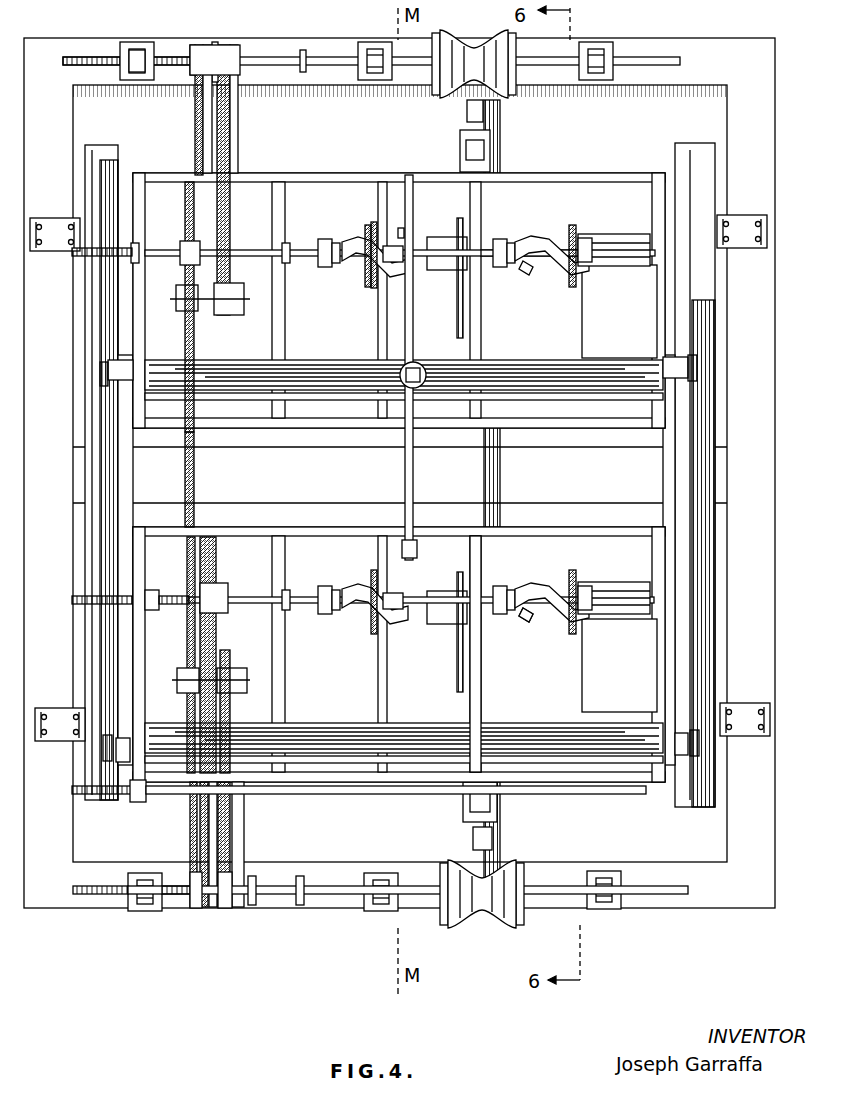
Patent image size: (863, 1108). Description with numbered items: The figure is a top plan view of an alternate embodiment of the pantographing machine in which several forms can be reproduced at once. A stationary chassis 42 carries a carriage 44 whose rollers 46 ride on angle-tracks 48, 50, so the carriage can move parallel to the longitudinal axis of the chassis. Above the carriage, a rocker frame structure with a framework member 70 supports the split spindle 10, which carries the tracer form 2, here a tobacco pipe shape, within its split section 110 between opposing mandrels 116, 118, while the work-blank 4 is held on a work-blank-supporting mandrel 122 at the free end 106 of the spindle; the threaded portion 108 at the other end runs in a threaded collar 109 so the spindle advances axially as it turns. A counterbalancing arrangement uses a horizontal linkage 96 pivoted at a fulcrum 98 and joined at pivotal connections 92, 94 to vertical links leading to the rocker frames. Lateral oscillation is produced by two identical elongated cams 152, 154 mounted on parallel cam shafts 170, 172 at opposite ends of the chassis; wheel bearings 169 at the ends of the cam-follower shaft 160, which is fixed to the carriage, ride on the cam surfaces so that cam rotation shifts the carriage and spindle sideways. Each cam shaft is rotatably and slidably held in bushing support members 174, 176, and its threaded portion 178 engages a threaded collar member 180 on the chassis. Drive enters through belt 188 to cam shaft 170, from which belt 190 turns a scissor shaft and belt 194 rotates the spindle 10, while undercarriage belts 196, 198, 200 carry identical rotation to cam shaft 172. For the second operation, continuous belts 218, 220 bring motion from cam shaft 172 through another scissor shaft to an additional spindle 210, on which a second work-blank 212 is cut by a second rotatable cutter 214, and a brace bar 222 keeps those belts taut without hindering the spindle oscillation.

The tracer form 2 is at (354, 581).
The work-blank 4 is at (548, 585).
The split spindle 10 is at (305, 595).
The stationary chassis 42 is at (718, 898).
The carriage 44 is at (682, 600).
The rollers 46 is at (108, 380).
The angle-track 48 is at (98, 652).
The angle-track 50 is at (700, 642).
The framework member 70 is at (484, 548).
The pivotal connection 92 is at (418, 552).
The pivotal connection 94 is at (405, 230).
The horizontal linkage 96 is at (413, 317).
The fulcrum 98 is at (416, 368).
The free end 106 is at (515, 617).
The threaded portion 108 is at (80, 597).
The threaded collar 109 is at (155, 592).
The split section 110 is at (354, 622).
The mandrel 116 is at (402, 612).
The mandrel 118 is at (334, 612).
The work-blank-supporting mandrel 122 is at (530, 594).
The elongated cam 152 is at (464, 925).
The elongated cam 154 is at (468, 36).
The cam-follower shaft 160 is at (490, 120).
The wheel bearings 169 is at (482, 106).
The cam shaft 170 is at (316, 895).
The cam shaft 172 is at (263, 57).
The bushing support member 174 is at (372, 52).
The bushing support member 176 is at (112, 55).
The threaded portion 178 is at (90, 898).
The threaded collar member 180 is at (135, 68).
The belt 188 is at (210, 910).
The belt 190 is at (226, 700).
The belt 194 is at (214, 647).
The belt 196 is at (196, 910).
The belt 198 is at (195, 514).
The belt 200 is at (228, 192).
The additional spindle 210 is at (295, 235).
The second work-blank 212 is at (548, 238).
The second rotatable cutter 214 is at (574, 230).
The continuous belt 218 is at (196, 124).
The continuous belt 220 is at (189, 210).
The brace bar 222 is at (234, 124).